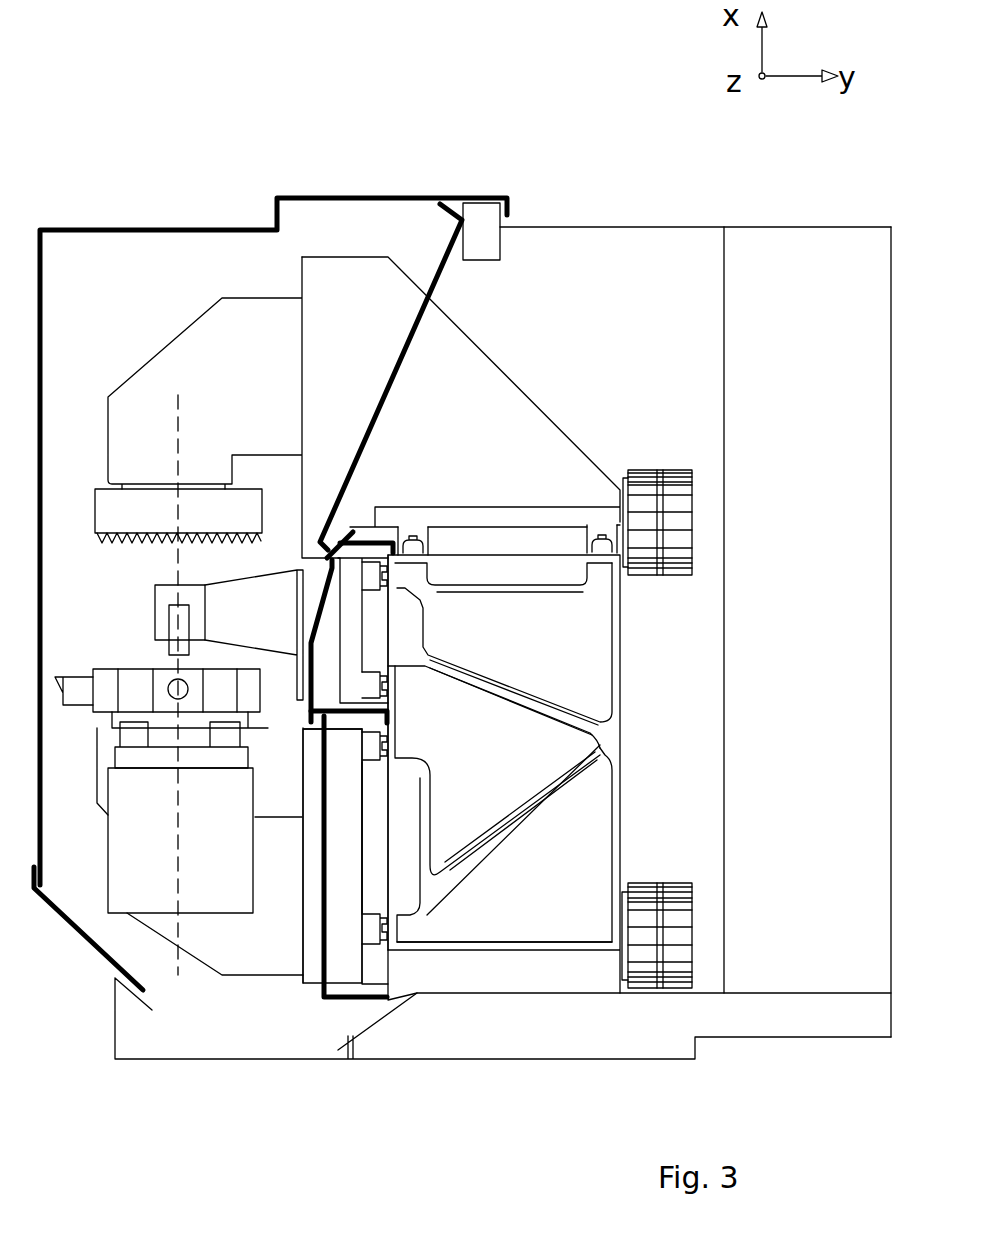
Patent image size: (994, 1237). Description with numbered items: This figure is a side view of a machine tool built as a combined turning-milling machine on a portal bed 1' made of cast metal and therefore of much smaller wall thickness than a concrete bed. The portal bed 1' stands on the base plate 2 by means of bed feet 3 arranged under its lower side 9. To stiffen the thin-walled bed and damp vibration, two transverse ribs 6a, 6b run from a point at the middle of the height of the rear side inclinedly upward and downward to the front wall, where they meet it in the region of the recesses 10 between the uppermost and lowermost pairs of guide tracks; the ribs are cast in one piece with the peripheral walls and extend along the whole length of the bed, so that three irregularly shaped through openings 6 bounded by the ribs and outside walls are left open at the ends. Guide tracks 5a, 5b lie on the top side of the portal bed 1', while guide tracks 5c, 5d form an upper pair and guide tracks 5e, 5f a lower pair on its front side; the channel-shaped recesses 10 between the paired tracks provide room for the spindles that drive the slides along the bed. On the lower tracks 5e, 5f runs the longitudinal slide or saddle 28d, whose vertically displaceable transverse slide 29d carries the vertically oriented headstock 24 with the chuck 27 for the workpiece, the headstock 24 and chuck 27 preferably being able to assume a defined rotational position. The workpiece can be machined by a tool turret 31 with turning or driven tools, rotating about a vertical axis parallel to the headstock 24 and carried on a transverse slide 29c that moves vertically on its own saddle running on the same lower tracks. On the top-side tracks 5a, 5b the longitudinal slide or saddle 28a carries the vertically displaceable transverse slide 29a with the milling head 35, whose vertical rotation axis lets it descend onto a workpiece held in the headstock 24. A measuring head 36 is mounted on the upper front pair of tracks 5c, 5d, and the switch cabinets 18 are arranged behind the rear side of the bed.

The portal bed 1' is at (535, 774).
The base plate 2 is at (503, 1018).
The bed feet 3 is at (414, 975).
The guide track 5a is at (587, 553).
The guide track 5b is at (428, 552).
The guide track 5c is at (383, 592).
The guide track 5d is at (385, 688).
The guide track 5e is at (370, 742).
The guide track 5f is at (388, 944).
The through opening 6 is at (503, 736).
The transverse rib 6a is at (547, 712).
The transverse rib 6b is at (550, 803).
The lower side 9 is at (503, 947).
The recesses 10 is at (373, 771).
The switch cabinets 18 is at (807, 632).
The headstock 24 is at (205, 871).
The chuck 27 is at (133, 760).
The longitudinal slide or saddle 28a is at (461, 392).
The longitudinal slide or saddle 28d is at (345, 802).
The transverse slide 29a is at (224, 407).
The transverse slide 29c is at (302, 742).
The transverse slide 29d is at (310, 856).
The tool turret 31 is at (104, 675).
The milling head 35 is at (178, 516).
The measuring head 36 is at (170, 630).